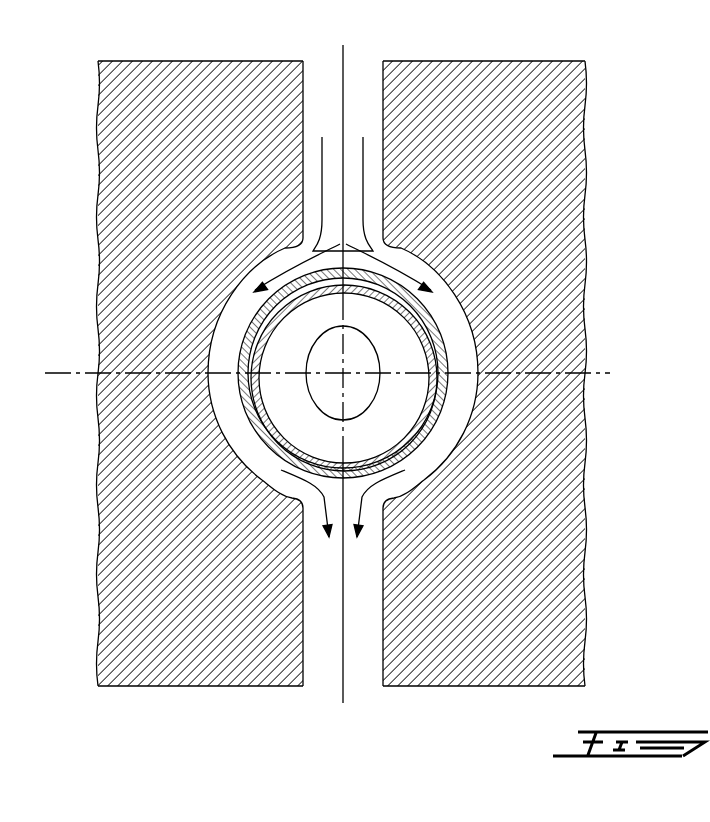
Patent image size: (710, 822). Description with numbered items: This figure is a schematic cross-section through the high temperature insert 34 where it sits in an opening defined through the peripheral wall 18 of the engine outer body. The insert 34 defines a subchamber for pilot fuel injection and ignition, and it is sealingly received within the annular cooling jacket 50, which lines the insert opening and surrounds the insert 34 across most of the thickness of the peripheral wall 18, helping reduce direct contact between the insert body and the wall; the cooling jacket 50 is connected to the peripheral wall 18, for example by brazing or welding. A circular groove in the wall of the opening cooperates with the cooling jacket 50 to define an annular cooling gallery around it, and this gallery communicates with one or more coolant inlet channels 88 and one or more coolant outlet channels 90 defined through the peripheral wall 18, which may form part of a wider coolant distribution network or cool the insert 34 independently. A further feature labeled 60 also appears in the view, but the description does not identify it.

The peripheral wall 18 is at (162, 553).
The high temperature insert 34 is at (443, 357).
The annular cooling jacket 50 is at (253, 318).
The bore 60 is at (228, 407).
The coolant inlet channel 88 is at (329, 96).
The coolant outlet channel 90 is at (322, 652).